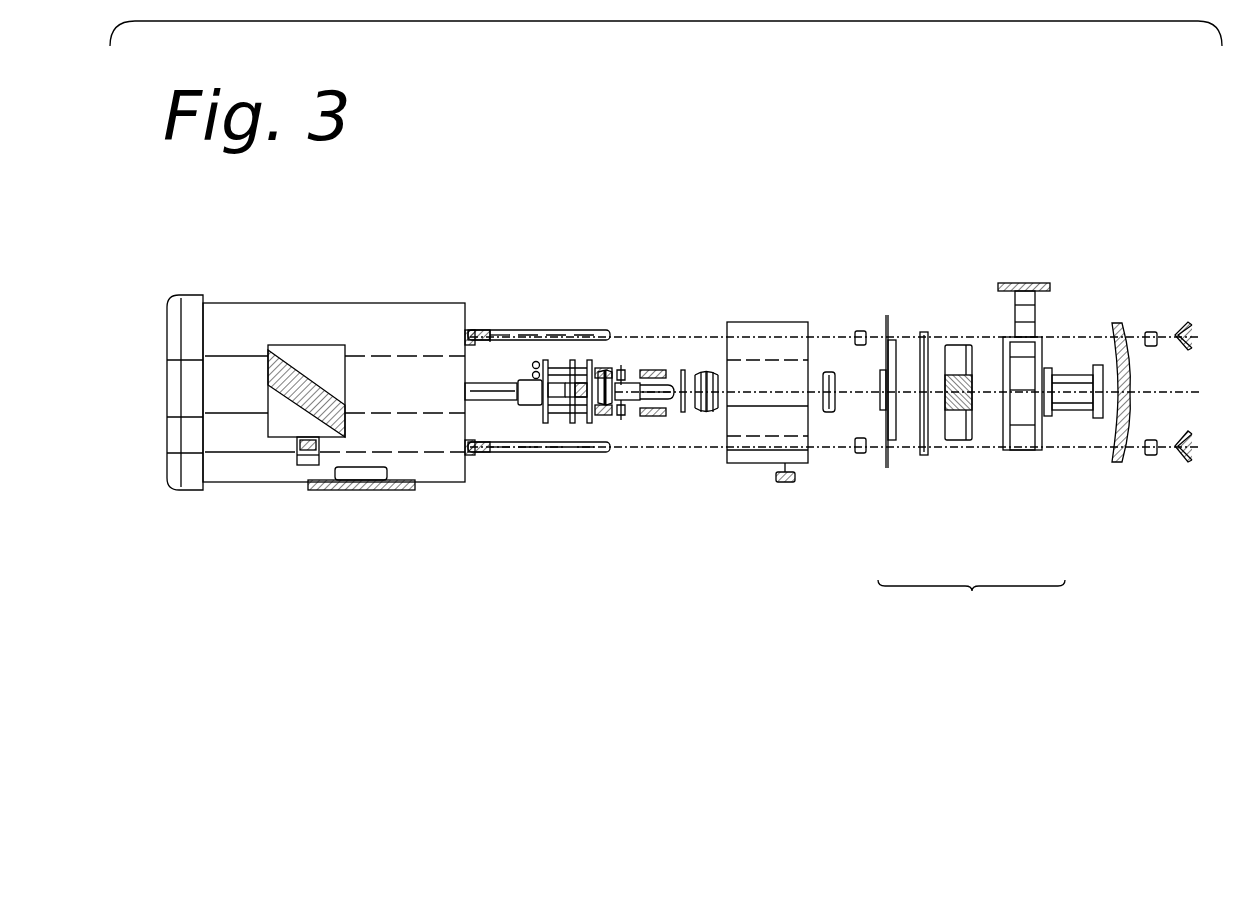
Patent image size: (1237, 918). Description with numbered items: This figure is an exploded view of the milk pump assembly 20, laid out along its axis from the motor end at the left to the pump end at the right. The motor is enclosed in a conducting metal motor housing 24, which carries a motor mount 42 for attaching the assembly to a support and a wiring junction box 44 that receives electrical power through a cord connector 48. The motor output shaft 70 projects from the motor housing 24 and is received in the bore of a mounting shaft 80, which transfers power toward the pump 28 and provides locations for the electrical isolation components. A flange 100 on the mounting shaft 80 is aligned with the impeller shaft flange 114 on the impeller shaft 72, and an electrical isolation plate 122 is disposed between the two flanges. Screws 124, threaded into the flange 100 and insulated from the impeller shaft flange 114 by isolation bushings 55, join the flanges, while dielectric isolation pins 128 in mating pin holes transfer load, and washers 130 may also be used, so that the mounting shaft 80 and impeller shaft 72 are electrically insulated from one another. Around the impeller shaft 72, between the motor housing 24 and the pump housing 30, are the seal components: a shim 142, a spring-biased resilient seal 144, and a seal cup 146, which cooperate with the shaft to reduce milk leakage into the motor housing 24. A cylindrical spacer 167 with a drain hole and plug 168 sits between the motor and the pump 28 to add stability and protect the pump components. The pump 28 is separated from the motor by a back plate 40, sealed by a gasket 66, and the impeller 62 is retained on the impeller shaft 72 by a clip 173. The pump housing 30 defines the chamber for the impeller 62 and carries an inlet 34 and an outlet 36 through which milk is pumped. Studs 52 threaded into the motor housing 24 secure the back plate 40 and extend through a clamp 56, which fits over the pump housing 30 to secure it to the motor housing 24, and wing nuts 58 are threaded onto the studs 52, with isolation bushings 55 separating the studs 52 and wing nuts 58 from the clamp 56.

The milk pump assembly 20 is at (558, 228).
The motor housing 24 is at (410, 404).
The pump 28 is at (971, 602).
The pump housing 30 is at (1022, 452).
The inlet 34 is at (1100, 418).
The outlet 36 is at (1020, 283).
The back plate 40 is at (885, 325).
The motor mount 42 is at (402, 483).
The wiring junction box 44 is at (325, 382).
The cord connector 48 is at (292, 458).
The studs 52 is at (521, 330).
The isolation bushings 55 is at (608, 370).
The clamp 56 is at (1123, 462).
The wing nuts 58 is at (1185, 322).
The impeller 62 is at (957, 440).
The gasket 66 is at (922, 455).
The motor output shaft 70 is at (496, 330).
The impeller shaft 72 is at (683, 412).
The mounting shaft 80 is at (528, 405).
The flange 100 is at (548, 423).
The impeller shaft flange 114 is at (640, 400).
The electrical isolation plate 122 is at (578, 360).
The screws 124 is at (650, 372).
The isolation pins 128 is at (621, 368).
The washers 130 is at (622, 416).
The shim 142 is at (705, 412).
The resilient seal 144 is at (710, 372).
The seal cup 146 is at (828, 372).
The spacer 167 is at (780, 397).
The drain hole and plug 168 is at (787, 482).
The clip 173 is at (982, 382).